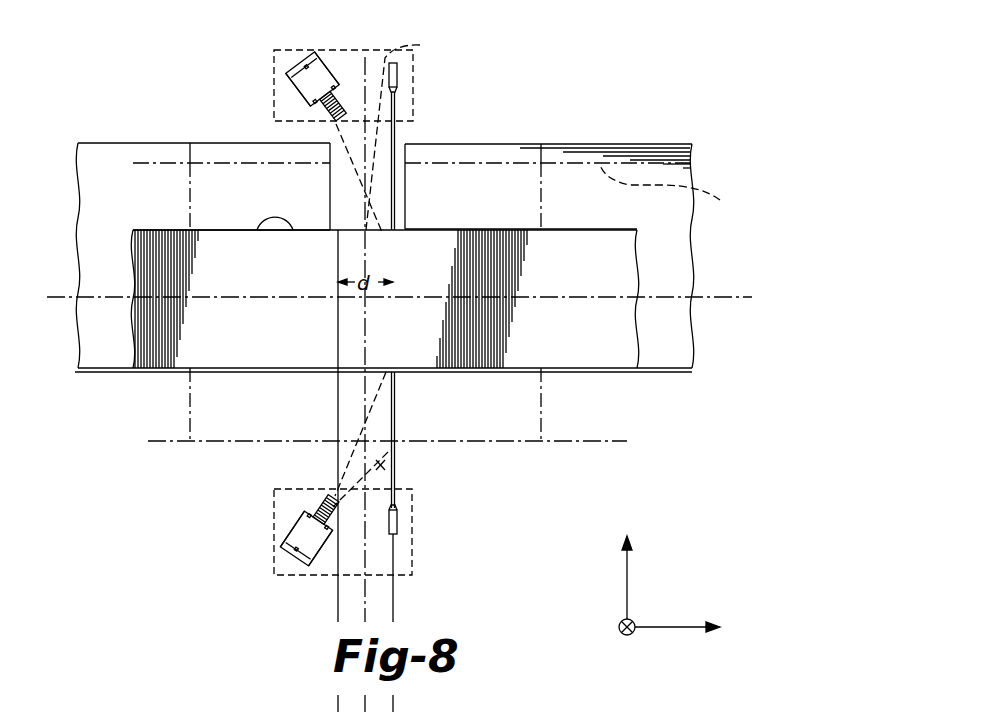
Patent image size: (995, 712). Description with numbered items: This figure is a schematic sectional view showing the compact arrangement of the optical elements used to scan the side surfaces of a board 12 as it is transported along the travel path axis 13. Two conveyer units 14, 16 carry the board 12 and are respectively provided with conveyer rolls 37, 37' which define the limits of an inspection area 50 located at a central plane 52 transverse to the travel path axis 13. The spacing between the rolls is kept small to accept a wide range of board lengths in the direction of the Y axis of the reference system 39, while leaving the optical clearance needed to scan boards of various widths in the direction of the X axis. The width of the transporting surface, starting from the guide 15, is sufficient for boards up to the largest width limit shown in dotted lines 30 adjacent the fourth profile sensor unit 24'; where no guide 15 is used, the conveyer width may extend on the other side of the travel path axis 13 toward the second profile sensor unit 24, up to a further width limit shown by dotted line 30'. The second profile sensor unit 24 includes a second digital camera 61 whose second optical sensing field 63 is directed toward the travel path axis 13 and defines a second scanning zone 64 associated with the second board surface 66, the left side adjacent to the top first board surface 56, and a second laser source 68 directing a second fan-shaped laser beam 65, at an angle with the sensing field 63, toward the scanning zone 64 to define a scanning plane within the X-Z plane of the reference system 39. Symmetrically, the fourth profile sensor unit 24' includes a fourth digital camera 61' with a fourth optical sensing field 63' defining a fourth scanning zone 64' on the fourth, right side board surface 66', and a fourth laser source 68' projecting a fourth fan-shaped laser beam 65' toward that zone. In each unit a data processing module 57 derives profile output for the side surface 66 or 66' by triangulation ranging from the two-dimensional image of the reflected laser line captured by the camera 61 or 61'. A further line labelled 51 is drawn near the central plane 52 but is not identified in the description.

The board 12 is at (113, 318).
The travel path axis 13 is at (738, 296).
The conveyer unit 14 is at (583, 110).
The guide 15 is at (90, 372).
The conveyer unit 16 is at (127, 132).
The second profile sensor unit 24 is at (320, 557).
The fourth profile sensor unit 24' is at (271, 80).
The largest board width limit 30 is at (677, 193).
The further board width limit 30' is at (398, 474).
The conveyer roll 37 is at (231, 122).
The conveyer roll 37' is at (547, 122).
The reference system 39 is at (658, 628).
The inspection area 50 is at (350, 75).
The guide line 51 is at (437, 703).
The central plane 52 is at (372, 56).
The first board surface 56 is at (147, 283).
The data processing module 57 is at (305, 72).
The second digital camera 61 is at (272, 530).
The fourth digital camera 61' is at (278, 87).
The second optical sensing field 63 is at (393, 479).
The fourth optical sensing field 63' is at (414, 130).
The second scanning zone 64 is at (431, 391).
The fourth scanning zone 64' is at (433, 190).
The second fan-shaped laser beam 65 is at (423, 440).
The fourth fan-shaped laser beam 65' is at (436, 161).
The second board surface 66 is at (333, 434).
The fourth board surface 66' is at (319, 202).
The second laser source 68 is at (438, 563).
The fourth laser source 68' is at (429, 76).